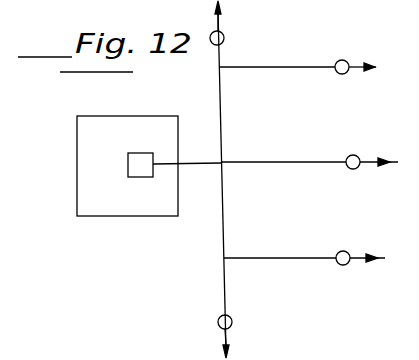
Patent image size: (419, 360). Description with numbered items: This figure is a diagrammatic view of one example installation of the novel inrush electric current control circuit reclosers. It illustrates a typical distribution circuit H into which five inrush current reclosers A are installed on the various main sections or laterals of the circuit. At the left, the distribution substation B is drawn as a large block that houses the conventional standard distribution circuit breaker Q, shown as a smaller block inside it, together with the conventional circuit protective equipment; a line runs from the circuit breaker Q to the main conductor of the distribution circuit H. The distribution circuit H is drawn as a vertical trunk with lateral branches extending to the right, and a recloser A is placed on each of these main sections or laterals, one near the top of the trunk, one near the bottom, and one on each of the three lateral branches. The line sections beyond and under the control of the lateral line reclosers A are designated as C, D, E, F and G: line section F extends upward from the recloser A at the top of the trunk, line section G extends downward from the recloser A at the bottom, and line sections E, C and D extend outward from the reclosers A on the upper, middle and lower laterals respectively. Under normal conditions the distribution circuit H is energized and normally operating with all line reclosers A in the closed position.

The inrush electric current control circuit recloser A is at (225, 38).
The distribution substation B is at (97, 210).
The circuit breaker Q is at (140, 173).
The distribution circuit H is at (222, 162).
The line section F is at (220, 23).
The line section G is at (227, 338).
The line section E is at (352, 70).
The line section C is at (370, 163).
The line section D is at (363, 260).